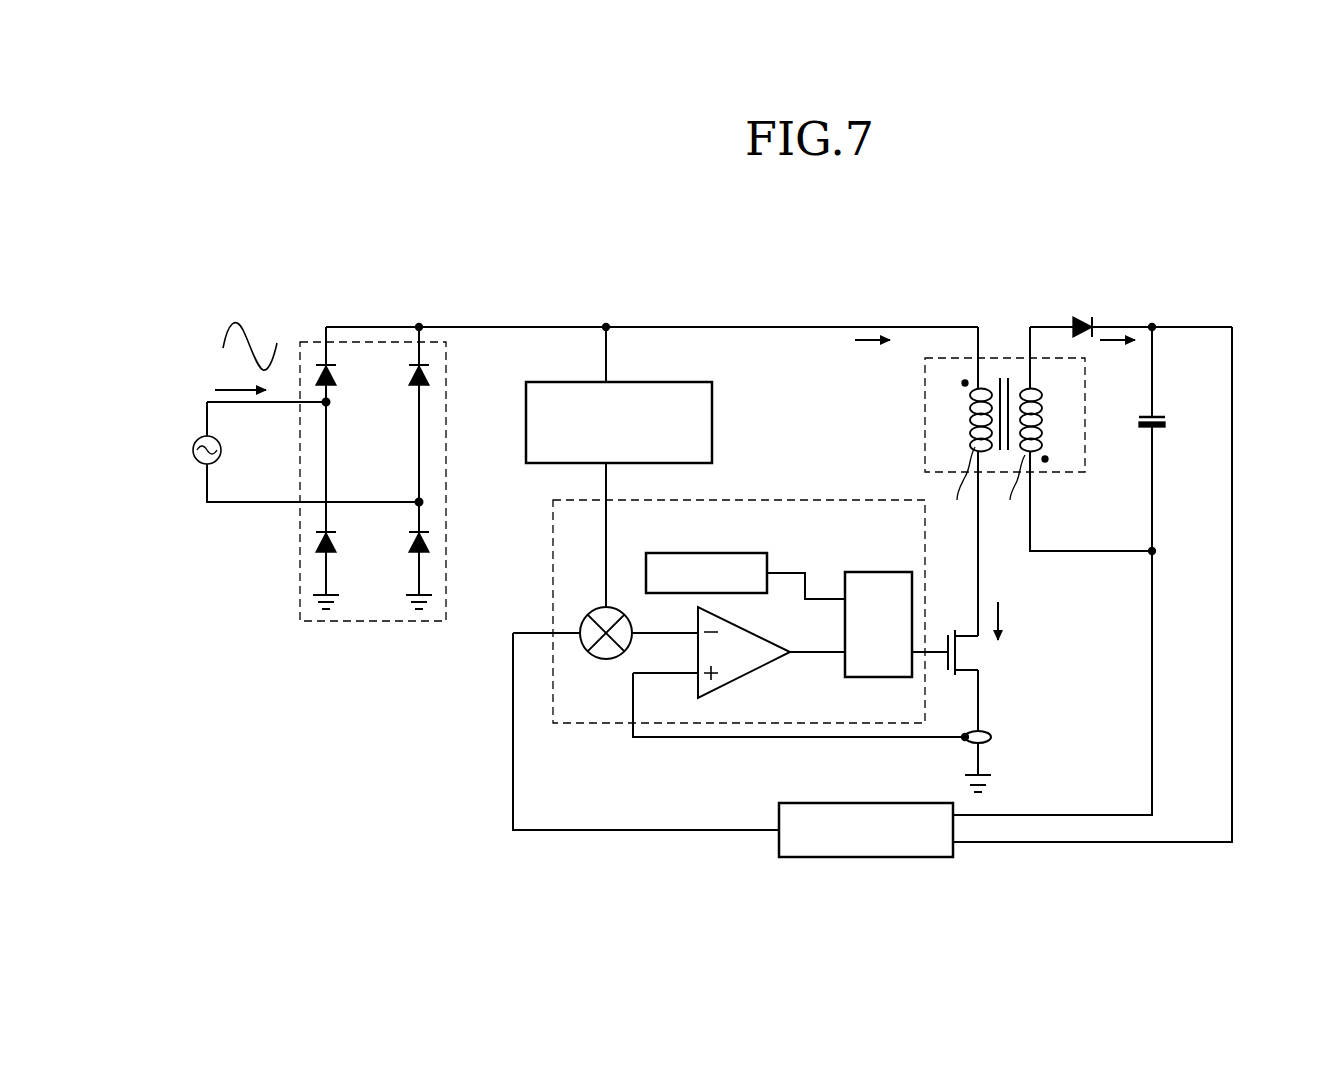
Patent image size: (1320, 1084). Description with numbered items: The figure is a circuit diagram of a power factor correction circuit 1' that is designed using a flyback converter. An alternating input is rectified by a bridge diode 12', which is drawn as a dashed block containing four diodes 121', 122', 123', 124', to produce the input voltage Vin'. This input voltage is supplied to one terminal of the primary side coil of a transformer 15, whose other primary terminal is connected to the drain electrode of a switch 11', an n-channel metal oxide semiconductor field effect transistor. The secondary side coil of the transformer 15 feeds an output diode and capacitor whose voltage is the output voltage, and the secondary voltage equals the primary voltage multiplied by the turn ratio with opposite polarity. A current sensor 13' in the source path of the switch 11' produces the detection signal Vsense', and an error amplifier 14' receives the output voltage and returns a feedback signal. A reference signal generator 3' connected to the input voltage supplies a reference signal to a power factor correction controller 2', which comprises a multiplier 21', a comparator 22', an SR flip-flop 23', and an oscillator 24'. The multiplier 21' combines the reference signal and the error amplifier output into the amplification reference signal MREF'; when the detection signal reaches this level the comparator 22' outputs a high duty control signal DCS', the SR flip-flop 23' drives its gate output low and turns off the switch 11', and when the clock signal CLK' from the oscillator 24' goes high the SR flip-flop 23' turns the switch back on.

The power factor correction circuit 1' is at (689, 563).
The bridge diode 12' is at (408, 474).
The diode 121' is at (357, 537).
The diode 122' is at (357, 371).
The diode 123' is at (462, 528).
The diode 124' is at (462, 375).
The reference signal generator 3' is at (646, 422).
The power factor correction controller 2' is at (739, 581).
The multiplier 21' is at (606, 661).
The comparator 22' is at (744, 664).
The SR flip-flop 23' is at (879, 601).
The oscillator 24' is at (706, 552).
The switch 11' is at (981, 652).
The current sensor 13' is at (1006, 733).
The error amplifier 14' is at (866, 858).
The transformer 15 is at (1002, 360).